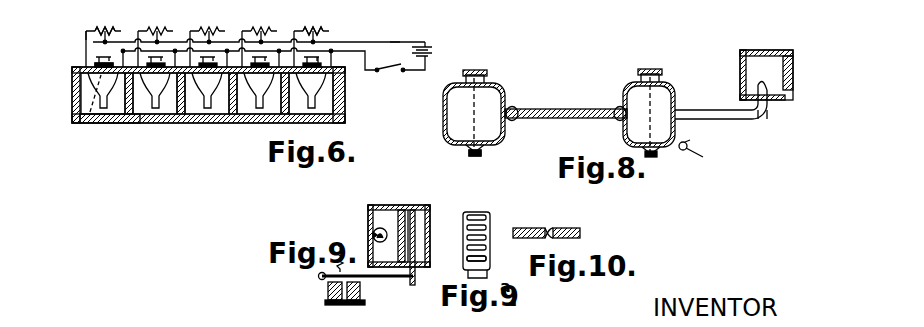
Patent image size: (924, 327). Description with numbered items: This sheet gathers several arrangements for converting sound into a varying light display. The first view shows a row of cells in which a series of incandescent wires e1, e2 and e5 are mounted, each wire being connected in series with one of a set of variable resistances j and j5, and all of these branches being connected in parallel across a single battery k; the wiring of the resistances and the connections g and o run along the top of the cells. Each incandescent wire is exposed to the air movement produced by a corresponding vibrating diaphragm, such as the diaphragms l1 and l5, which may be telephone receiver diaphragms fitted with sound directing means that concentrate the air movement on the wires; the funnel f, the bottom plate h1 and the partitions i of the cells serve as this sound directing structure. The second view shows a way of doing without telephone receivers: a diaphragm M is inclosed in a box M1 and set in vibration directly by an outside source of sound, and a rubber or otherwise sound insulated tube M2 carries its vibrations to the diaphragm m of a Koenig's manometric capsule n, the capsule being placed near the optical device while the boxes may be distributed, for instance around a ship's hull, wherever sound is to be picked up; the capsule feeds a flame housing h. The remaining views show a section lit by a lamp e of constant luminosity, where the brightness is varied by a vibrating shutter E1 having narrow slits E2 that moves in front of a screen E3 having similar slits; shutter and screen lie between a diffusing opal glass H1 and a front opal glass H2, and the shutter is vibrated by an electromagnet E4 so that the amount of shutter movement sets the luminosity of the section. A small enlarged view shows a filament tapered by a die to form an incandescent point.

In FIG. 6, the funnel f is at (78, 124).
In FIG. 6, the bottom plate h1 is at (105, 112).
In FIG. 6, the incandescent wire e2 is at (157, 105).
In FIG. 6, the partition i is at (247, 123).
In FIG. 6, the vibrating diaphragm l1 is at (88, 124).
In FIG. 6, the incandescent wire e1 is at (110, 124).
In FIG. 6, the incandescent wire e5 is at (340, 110).
In FIG. 6, the vibrating diaphragm l5 is at (320, 67).
In FIG. 6, the variable resistance j5 is at (316, 33).
In FIG. 6, the variable resistance j is at (115, 31).
In FIG. 6, the conductor g is at (97, 20).
In FIG. 6, the conductor o is at (388, 6).
In FIG. 6, the battery k is at (427, 52).
In FIG. 8, the diaphragm M is at (475, 107).
In FIG. 8, the box M1 is at (517, 140).
In FIG. 8, the sound insulated tube M2 is at (577, 110).
In FIG. 8, the diaphragm of manometric capsule m is at (646, 100).
In FIG. 8, the Koenig's manometric capsule n is at (675, 131).
In FIG. 8, the heater box h is at (795, 52).
In FIG. 9, the lamp e is at (375, 230).
In FIG. 9, the screen E3 is at (403, 210).
In FIG. 9, the opal glass H1 is at (395, 207).
In FIG. 9, the vibrating shutter E1 is at (414, 212).
In FIG. 9A, the vibrating shutter E1 is at (470, 262).
In FIG. 9, the opal glass H2 is at (431, 222).
In FIG. 9, the electromagnet E4 is at (361, 294).
In FIG. 9A, the slits E2 is at (490, 220).